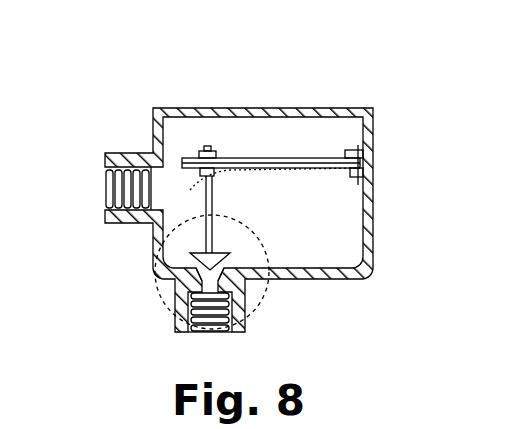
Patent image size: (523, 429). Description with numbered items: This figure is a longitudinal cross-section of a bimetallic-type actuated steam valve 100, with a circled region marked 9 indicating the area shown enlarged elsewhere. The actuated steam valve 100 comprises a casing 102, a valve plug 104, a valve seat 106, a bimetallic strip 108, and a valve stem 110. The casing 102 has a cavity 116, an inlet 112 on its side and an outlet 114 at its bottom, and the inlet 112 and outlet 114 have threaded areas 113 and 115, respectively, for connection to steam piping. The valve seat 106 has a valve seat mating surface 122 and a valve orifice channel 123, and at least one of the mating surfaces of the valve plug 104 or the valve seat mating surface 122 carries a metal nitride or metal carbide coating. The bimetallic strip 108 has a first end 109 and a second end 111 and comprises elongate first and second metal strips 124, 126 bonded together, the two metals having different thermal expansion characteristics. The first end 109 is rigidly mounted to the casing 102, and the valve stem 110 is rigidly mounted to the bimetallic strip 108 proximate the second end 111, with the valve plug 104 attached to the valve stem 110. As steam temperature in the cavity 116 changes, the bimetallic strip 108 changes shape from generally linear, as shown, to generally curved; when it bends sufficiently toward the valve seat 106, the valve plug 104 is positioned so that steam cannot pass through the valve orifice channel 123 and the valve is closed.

The actuated steam valve 100 is at (380, 128).
The casing 102 is at (368, 201).
The valve plug 104 is at (228, 258).
The valve seat 106 is at (178, 290).
The bimetallic strip 108 is at (268, 158).
The first end 109 is at (353, 160).
The valve stem 110 is at (213, 197).
The second end 111 is at (192, 158).
The inlet 112 is at (105, 195).
The threaded area 113 is at (128, 182).
The outlet 114 is at (218, 333).
The threaded area 115 is at (200, 333).
The cavity 116 is at (350, 240).
The valve seat mating surface 122 is at (173, 278).
The valve orifice channel 123 is at (247, 281).
The first metal strip 124 is at (325, 162).
The second metal strip 126 is at (331, 170).
The detail region 9 is at (250, 311).